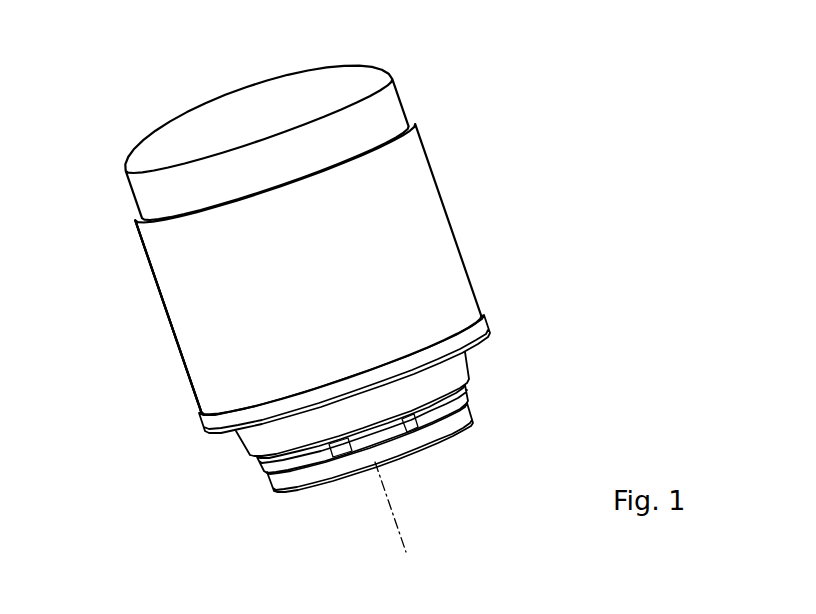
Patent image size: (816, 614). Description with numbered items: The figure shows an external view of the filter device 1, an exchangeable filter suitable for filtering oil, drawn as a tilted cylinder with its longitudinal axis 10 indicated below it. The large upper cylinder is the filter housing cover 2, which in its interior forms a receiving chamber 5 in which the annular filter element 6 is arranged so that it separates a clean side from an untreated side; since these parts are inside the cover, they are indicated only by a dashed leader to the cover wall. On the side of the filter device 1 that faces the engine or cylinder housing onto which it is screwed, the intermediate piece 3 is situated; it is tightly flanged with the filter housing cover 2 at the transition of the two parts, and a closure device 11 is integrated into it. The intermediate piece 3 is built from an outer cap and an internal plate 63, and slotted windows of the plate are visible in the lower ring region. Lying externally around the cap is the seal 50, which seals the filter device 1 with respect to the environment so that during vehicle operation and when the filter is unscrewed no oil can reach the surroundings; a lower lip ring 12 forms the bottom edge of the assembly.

The filter device 1 is at (497, 110).
The filter housing cover 2 is at (432, 228).
The intermediate piece 3 is at (470, 389).
The receiving chamber 5 is at (200, 294).
The annular filter element 6 is at (128, 317).
The longitudinal axis 10 is at (387, 505).
The closure device 11 is at (242, 482).
The lower lip ring 12 is at (433, 441).
The seal 50 is at (460, 371).
The internal plate 63 is at (303, 463).